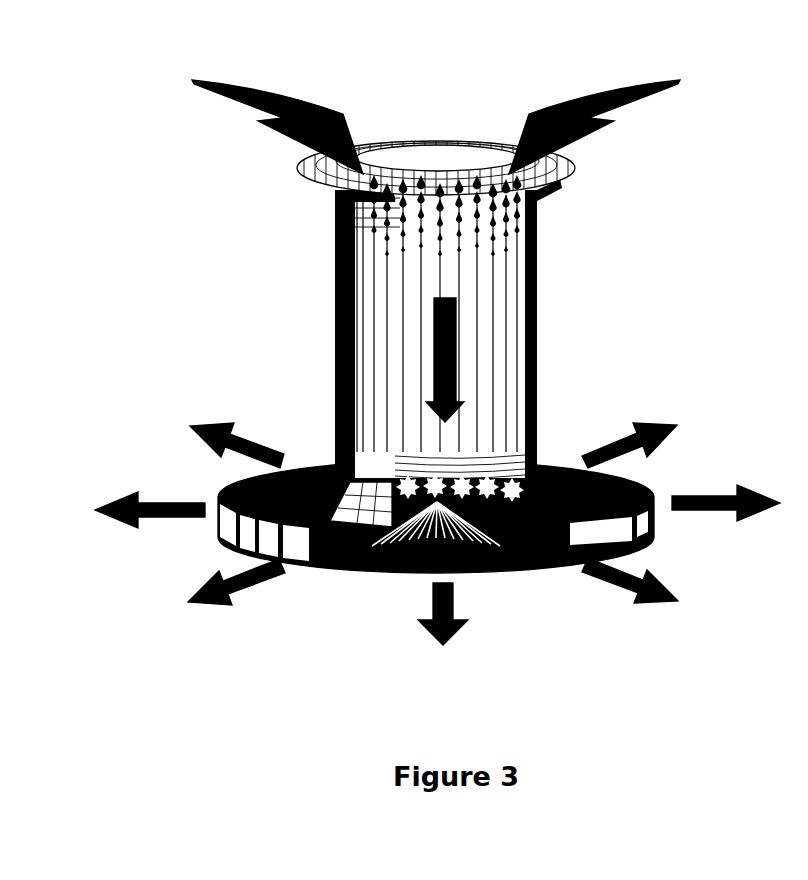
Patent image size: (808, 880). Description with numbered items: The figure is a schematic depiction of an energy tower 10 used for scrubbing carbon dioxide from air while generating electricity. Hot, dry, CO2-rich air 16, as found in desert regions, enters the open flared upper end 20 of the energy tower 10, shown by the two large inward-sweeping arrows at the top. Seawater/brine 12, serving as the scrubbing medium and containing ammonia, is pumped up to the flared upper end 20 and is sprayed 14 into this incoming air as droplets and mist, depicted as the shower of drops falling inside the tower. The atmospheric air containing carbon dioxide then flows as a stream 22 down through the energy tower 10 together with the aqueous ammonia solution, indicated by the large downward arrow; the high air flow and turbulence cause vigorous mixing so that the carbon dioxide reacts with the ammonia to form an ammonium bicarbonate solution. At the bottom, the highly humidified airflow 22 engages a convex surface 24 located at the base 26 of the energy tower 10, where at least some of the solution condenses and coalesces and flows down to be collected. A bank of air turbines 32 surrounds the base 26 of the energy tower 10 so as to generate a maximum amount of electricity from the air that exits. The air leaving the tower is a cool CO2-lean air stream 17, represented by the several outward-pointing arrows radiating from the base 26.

The energy tower 10 is at (297, 323).
The seawater/brine 12 is at (398, 227).
The seawater spray 14 is at (445, 298).
The hot, dry, CO2-rich air 16 is at (448, 84).
The cool CO2-lean air stream 17 is at (704, 484).
The flared upper end 20 is at (290, 166).
The air stream 22 is at (457, 360).
The convex surface 24 is at (512, 572).
The base 26 is at (318, 583).
The bank of air turbines 32 is at (447, 472).